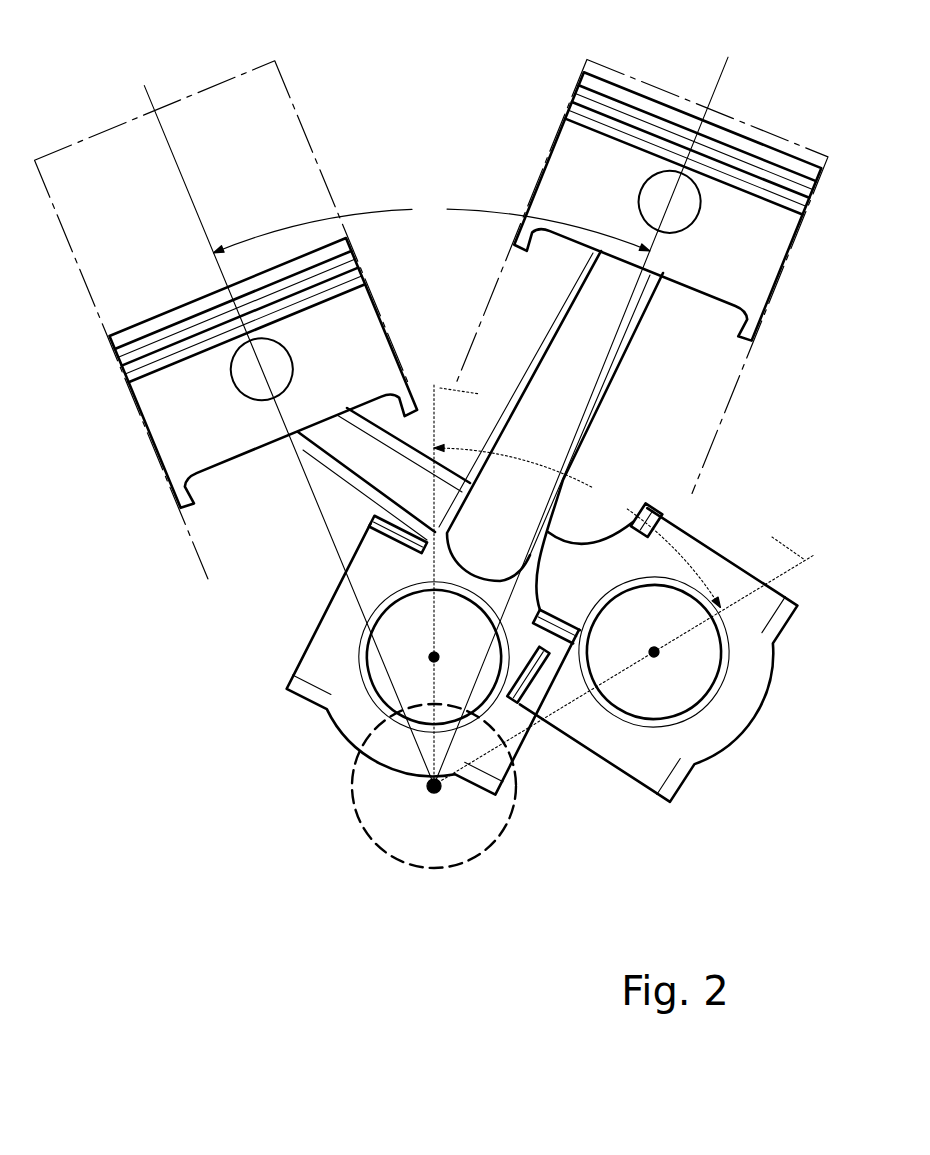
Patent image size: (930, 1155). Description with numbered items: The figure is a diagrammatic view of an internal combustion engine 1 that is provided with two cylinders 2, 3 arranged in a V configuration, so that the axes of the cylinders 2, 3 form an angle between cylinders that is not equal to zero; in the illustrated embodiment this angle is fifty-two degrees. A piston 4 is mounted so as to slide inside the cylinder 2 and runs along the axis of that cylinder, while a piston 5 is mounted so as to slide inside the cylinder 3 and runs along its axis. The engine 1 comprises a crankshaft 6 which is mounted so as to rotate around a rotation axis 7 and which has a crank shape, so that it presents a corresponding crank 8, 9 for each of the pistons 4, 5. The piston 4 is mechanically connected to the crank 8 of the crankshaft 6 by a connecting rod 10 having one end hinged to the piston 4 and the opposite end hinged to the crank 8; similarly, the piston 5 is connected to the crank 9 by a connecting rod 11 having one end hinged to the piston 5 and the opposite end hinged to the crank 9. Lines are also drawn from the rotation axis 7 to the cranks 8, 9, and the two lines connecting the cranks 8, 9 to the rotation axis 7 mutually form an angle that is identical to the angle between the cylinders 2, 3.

The internal combustion engine 1 is at (177, 887).
The cylinder 2 is at (243, 323).
The cylinder 3 is at (639, 276).
The piston 4 is at (263, 373).
The piston 5 is at (667, 206).
The crankshaft 6 is at (380, 886).
The rotation axis 7 is at (426, 786).
The crank 8 is at (403, 638).
The crank 9 is at (675, 672).
The connecting rod 10 is at (382, 478).
The connecting rod 11 is at (593, 440).